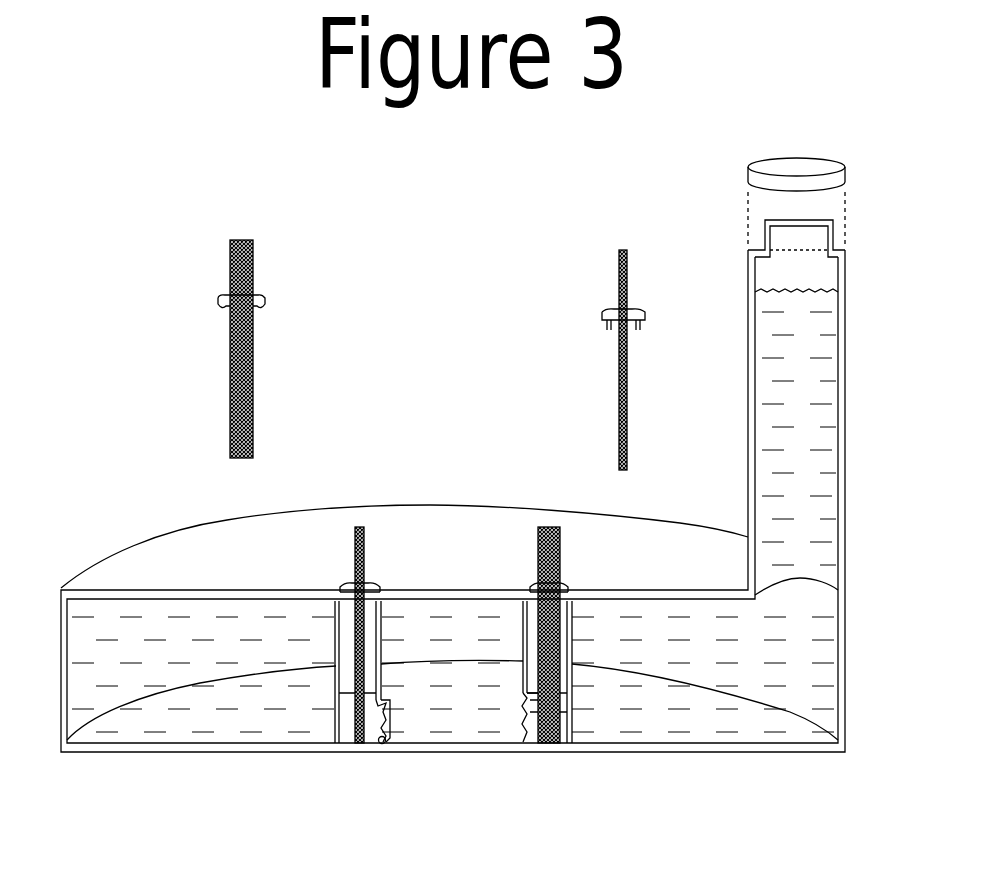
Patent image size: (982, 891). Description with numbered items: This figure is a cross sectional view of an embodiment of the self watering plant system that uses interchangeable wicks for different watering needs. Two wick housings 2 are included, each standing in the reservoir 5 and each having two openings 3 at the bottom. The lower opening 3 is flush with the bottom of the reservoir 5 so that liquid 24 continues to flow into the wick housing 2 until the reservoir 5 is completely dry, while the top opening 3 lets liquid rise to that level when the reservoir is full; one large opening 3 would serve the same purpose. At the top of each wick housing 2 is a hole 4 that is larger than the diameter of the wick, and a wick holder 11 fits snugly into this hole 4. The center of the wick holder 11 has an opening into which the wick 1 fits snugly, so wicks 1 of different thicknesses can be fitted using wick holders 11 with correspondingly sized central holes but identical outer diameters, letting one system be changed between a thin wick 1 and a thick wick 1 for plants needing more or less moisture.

The wick 1 is at (612, 443).
The wick housing 2 is at (538, 622).
The opening 3 is at (385, 703).
The hole 4 is at (382, 588).
The reservoir 5 is at (793, 275).
The wick holder 11 is at (343, 583).
The liquid 24 is at (788, 645).